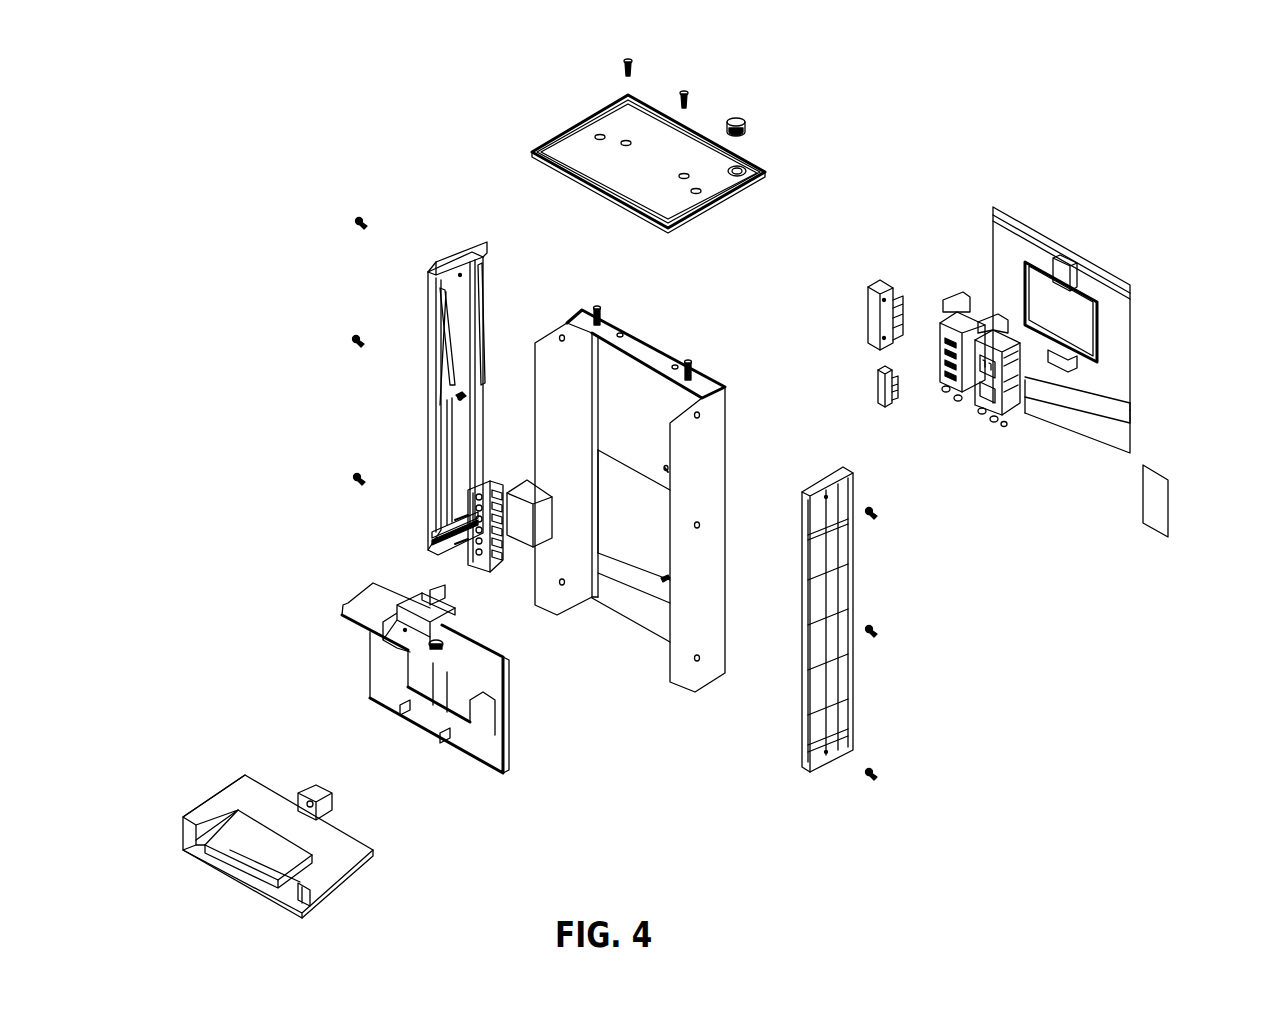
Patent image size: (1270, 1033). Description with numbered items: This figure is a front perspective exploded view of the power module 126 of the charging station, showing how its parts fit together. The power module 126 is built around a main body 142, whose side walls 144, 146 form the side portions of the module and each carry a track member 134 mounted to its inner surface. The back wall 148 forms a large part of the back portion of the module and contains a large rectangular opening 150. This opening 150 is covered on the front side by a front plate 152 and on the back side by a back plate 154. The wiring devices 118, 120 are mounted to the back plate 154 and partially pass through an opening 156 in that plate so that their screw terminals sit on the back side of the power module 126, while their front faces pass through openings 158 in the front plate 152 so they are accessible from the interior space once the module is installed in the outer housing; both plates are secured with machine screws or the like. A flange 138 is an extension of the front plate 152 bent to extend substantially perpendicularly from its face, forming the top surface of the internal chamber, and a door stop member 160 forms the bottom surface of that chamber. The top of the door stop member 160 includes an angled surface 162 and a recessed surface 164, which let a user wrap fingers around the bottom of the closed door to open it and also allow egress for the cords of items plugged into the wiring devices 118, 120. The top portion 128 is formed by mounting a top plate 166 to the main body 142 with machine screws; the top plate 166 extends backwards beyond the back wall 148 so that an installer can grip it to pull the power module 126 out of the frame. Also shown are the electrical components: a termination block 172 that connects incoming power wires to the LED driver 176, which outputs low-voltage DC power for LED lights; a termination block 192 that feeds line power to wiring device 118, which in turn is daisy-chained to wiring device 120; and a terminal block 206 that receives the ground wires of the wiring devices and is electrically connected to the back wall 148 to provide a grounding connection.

The power module 126 is at (936, 70).
The top portion 128 is at (570, 137).
The top plate 166 is at (692, 130).
The track member 134 is at (426, 483).
The termination block 172 is at (480, 550).
The LED driver 176 is at (532, 508).
The side wall 144 is at (556, 345).
The back wall 148 is at (638, 385).
The side wall 146 is at (700, 695).
The main body 142 is at (665, 633).
The opening 150 is at (650, 583).
The termination block 192 is at (885, 290).
The terminal block 206 is at (873, 392).
The wiring device 120 is at (940, 334).
The wiring device 118 is at (1017, 405).
The back plate 154 is at (1118, 385).
The opening 156 is at (1018, 287).
The flange 138 is at (370, 600).
The front plate 152 is at (385, 668).
The openings 158 is at (400, 708).
The door stop member 160 is at (208, 808).
The angled surface 162 is at (228, 837).
The recessed surface 164 is at (262, 878).